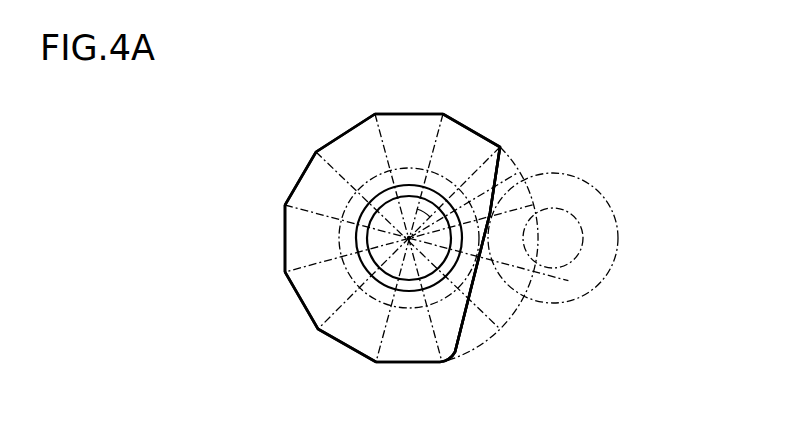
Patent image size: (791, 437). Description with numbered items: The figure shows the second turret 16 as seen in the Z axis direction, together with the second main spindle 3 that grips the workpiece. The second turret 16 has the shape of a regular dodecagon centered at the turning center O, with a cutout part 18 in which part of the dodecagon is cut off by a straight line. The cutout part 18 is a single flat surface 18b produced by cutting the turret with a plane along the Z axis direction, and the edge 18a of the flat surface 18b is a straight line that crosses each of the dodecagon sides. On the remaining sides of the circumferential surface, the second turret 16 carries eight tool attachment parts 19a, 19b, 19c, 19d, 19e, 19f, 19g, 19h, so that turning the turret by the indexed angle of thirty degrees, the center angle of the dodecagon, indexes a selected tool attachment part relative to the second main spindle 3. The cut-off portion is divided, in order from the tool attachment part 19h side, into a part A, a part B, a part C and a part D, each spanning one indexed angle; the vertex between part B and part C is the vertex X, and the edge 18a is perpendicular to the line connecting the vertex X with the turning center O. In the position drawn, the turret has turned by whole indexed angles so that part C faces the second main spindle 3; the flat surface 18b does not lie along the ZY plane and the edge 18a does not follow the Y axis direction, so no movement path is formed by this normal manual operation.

The second turret 16 is at (291, 129).
The tool attachment part 19a is at (485, 136).
The tool attachment part 19b is at (425, 113).
The tool attachment part 19c is at (329, 141).
The tool attachment part 19d is at (308, 160).
The tool attachment part 19e is at (285, 218).
The tool attachment part 19f is at (296, 292).
The tool attachment part 19g is at (332, 338).
The tool attachment part 19h is at (395, 363).
The cutout part 18 is at (464, 336).
The edge 18a is at (495, 337).
The flat surface 18b is at (495, 180).
The second main spindle 3 is at (598, 192).
The turning center O is at (409, 238).
The part A is at (494, 344).
The part B is at (523, 310).
The part C is at (540, 242).
The part D is at (520, 170).
The vertex X is at (540, 277).